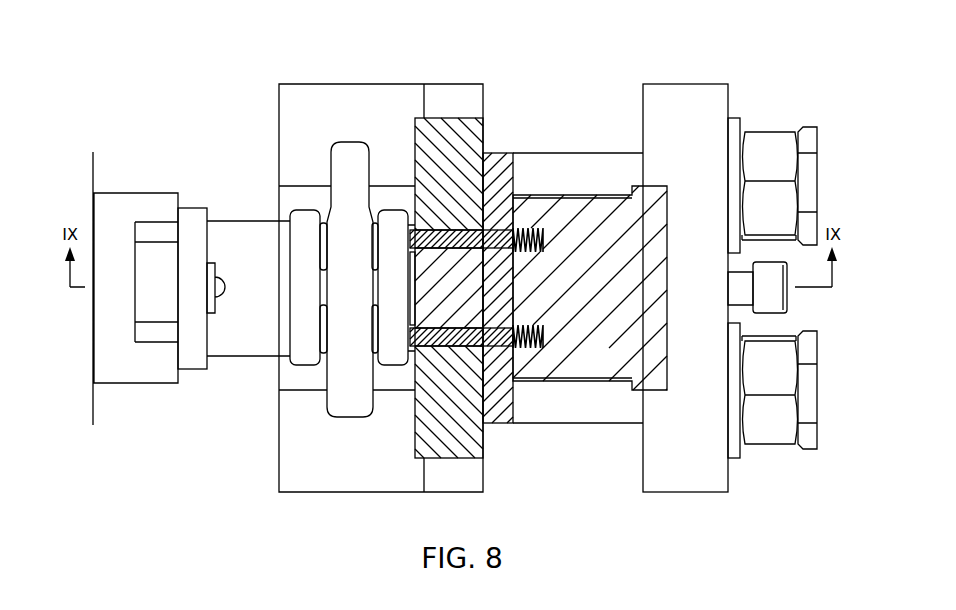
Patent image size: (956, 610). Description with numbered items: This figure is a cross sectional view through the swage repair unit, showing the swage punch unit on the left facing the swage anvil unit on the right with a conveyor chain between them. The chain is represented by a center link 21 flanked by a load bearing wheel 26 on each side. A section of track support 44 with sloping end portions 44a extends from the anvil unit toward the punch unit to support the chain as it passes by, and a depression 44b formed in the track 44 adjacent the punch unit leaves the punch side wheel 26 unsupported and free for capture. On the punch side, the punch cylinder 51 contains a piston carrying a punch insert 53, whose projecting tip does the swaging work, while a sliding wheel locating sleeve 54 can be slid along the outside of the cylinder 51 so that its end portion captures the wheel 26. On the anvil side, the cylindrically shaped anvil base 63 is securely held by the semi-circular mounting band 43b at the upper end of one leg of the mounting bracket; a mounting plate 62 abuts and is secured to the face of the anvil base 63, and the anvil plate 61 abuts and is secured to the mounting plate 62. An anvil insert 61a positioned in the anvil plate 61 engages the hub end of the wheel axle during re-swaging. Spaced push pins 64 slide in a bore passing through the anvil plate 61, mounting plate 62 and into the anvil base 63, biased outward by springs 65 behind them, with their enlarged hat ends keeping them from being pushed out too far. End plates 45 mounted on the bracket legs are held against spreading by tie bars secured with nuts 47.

The center link 21 is at (348, 153).
The load bearing wheel 26 is at (303, 228).
The semi-circular mounting band 43b is at (573, 182).
The track support 44 is at (294, 383).
The sloping end portion 44a is at (303, 125).
The depression 44b is at (282, 323).
The end plate 45 is at (683, 95).
The nut 47 is at (767, 145).
The punch cylinder 51 is at (188, 350).
The punch insert 53 is at (223, 263).
The wheel locating sleeve 54 is at (137, 205).
The anvil plate 61 is at (452, 130).
The anvil insert 61a is at (441, 298).
The mounting plate 62 is at (507, 172).
The anvil base 63 is at (647, 243).
The push pin 64 is at (463, 227).
The spring 65 is at (522, 227).